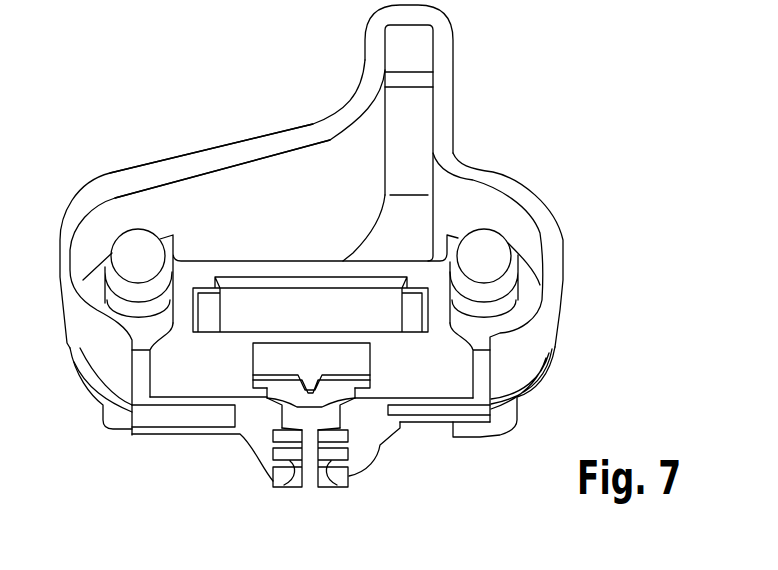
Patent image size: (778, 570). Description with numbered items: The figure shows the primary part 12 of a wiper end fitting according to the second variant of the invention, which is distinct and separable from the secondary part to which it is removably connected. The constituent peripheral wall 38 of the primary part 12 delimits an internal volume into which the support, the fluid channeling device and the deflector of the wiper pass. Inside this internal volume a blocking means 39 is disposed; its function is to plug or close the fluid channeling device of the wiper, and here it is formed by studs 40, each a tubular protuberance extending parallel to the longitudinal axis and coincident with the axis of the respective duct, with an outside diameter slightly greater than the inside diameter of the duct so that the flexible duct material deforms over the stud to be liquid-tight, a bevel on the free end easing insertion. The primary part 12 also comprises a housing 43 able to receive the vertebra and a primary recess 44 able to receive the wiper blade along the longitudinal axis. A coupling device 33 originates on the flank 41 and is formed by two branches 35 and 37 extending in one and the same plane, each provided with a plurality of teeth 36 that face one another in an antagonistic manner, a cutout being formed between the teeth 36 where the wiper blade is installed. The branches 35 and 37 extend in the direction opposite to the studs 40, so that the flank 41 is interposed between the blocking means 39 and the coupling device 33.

The primary part 12 is at (522, 106).
The coupling device 33 is at (380, 467).
The branch 35 is at (257, 448).
The tooth 36 is at (290, 463).
The branch 37 is at (365, 438).
The peripheral wall 38 is at (305, 137).
The blocking means 39 is at (140, 220).
The stud 40 is at (133, 257).
The flank 41 is at (207, 403).
The housing 43 is at (252, 303).
The primary recess 44 is at (293, 417).